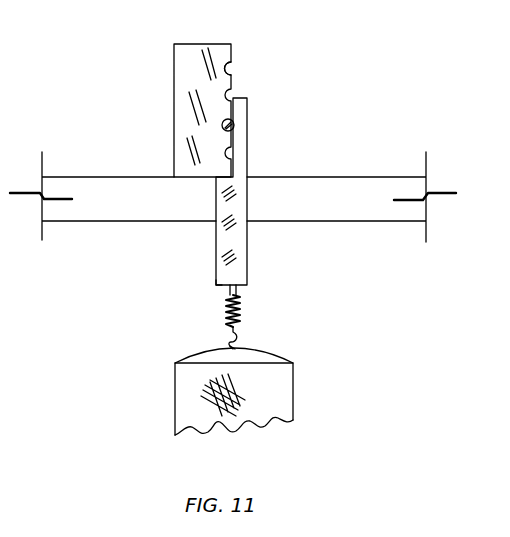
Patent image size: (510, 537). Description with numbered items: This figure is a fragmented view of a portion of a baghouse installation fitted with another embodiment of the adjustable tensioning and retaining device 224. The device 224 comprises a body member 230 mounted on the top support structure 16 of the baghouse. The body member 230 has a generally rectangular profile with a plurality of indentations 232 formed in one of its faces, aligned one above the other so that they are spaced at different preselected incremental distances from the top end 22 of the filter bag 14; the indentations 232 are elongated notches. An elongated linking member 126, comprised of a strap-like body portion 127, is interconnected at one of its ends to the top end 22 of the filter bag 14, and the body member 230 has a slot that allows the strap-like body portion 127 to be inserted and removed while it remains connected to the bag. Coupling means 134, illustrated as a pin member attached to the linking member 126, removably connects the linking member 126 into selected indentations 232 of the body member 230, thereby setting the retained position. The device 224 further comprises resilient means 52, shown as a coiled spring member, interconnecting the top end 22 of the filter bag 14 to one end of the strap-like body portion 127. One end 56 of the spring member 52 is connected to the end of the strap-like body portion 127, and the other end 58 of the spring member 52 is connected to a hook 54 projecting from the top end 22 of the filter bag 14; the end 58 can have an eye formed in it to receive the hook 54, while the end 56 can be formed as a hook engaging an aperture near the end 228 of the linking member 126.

The top support structure 16 is at (365, 197).
The body member 230 is at (177, 93).
The indentations 232 is at (230, 67).
The strap-like body portion 127 is at (247, 239).
The coupling means 134 is at (233, 122).
The elongated linking member 126 is at (280, 273).
The adjustable tensioning and retaining device 224 is at (142, 264).
The pin lower end 228 is at (215, 284).
The end of coil spring member 56 is at (247, 290).
The resilient means 52 is at (245, 308).
The hook 54 is at (242, 327).
The end of coil spring member 58 is at (228, 346).
The top end of filter bag 22 is at (265, 358).
The filter bag 14 is at (275, 393).